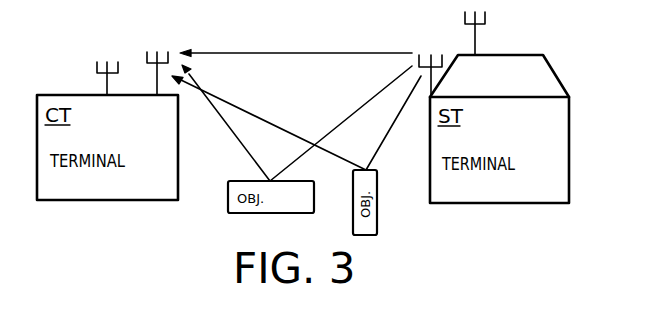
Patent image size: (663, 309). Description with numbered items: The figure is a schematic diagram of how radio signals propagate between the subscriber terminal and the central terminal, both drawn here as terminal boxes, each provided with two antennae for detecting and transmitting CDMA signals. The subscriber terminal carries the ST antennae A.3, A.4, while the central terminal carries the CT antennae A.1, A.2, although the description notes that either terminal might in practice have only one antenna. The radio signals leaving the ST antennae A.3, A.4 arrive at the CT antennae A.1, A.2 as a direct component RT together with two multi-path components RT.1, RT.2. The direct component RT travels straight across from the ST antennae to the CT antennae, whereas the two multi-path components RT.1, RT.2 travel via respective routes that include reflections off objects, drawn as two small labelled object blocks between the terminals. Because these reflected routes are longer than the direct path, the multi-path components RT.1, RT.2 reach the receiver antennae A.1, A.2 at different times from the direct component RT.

The CT antenna A.1 is at (96, 70).
The CT antenna A.2 is at (148, 55).
The ST antenna A.3 is at (432, 54).
The ST antenna A.4 is at (487, 20).
The direct component RT is at (297, 53).
The multi-path component RT.1 is at (258, 116).
The multi-path component RT.2 is at (232, 130).